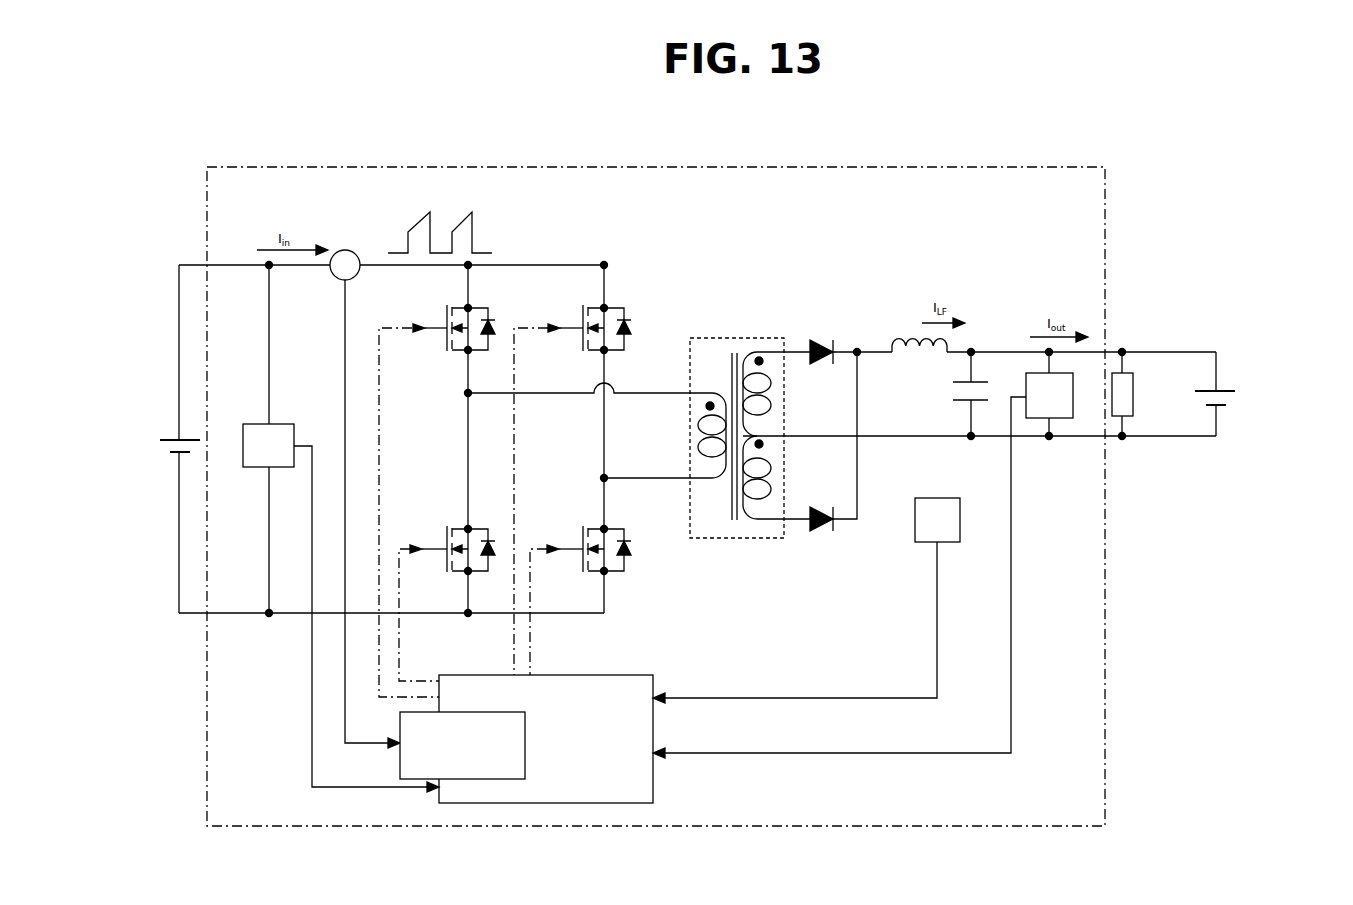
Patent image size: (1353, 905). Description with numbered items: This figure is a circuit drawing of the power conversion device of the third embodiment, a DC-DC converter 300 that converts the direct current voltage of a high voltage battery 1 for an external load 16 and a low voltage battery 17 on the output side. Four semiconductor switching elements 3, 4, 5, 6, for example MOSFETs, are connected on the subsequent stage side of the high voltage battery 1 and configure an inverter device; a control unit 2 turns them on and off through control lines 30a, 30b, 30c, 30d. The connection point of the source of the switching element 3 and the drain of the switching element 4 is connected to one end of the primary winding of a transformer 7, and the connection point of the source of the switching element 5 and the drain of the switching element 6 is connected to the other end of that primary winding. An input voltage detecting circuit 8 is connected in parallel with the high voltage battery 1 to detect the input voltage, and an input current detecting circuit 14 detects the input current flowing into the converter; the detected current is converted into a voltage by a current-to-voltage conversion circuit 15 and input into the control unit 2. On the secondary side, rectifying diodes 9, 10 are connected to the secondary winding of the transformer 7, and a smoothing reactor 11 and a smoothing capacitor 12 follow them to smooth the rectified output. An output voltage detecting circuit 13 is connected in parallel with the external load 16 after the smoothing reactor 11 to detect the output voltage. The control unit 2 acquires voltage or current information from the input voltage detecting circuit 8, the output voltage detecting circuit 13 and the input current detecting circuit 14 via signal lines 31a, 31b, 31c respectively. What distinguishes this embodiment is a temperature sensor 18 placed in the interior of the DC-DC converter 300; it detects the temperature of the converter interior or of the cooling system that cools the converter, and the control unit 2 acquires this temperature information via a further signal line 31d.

The high voltage battery 1 is at (170, 432).
The control unit 2 is at (638, 674).
The switching element 3 is at (443, 318).
The switching element 4 is at (443, 540).
The switching element 5 is at (580, 318).
The switching element 6 is at (582, 540).
The transformer 7 is at (712, 338).
The input voltage detecting circuit 8 is at (258, 424).
The rectifying diode 9 is at (805, 342).
The rectifying diode 10 is at (815, 508).
The smoothing reactor 11 is at (918, 333).
The smoothing capacitor 12 is at (950, 393).
The output voltage detecting circuit 13 is at (1060, 420).
The input current detecting circuit 14 is at (356, 252).
The current-to-voltage conversion circuit 15 is at (480, 712).
The external load 16 is at (1134, 395).
The low voltage battery 17 is at (1227, 387).
The temperature sensor 18 is at (913, 522).
The control line 30a is at (381, 468).
The control line 30b is at (402, 648).
The control line 30c is at (516, 468).
The control line 30d is at (532, 652).
The signal line 31a is at (312, 663).
The signal line 31b is at (937, 752).
The signal line 31c is at (343, 345).
The signal line 31d is at (810, 698).
The DC-DC converter 300 is at (1106, 557).